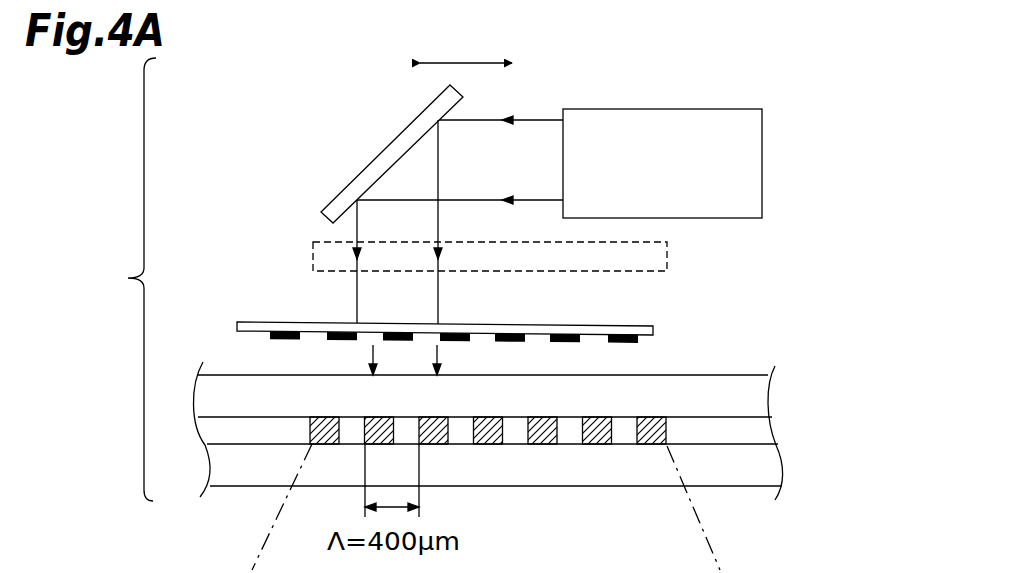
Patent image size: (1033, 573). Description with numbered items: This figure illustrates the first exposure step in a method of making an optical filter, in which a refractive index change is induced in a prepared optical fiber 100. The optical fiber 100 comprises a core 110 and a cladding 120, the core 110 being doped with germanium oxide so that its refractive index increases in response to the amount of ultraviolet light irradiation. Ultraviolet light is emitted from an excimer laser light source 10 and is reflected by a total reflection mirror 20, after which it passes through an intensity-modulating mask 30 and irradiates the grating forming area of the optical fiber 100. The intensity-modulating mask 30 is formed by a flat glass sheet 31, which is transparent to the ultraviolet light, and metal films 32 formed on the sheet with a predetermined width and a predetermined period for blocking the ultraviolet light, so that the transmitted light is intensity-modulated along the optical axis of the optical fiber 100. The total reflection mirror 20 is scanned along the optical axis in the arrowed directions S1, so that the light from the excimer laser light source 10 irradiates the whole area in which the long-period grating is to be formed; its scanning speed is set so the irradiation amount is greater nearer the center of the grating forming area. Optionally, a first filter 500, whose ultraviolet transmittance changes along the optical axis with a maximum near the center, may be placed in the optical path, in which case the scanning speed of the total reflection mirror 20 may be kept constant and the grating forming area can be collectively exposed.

The excimer laser light source 10 is at (640, 109).
The total reflection mirror 20 is at (346, 186).
The intensity-modulating mask 30 is at (425, 322).
The flat glass sheet 31 is at (262, 322).
The metal films 32 is at (285, 341).
The optical fiber 100 is at (515, 419).
The core 110 is at (677, 385).
The cladding 120 is at (702, 438).
The first filter 500 is at (667, 258).
The arrowed directions S1 is at (482, 62).